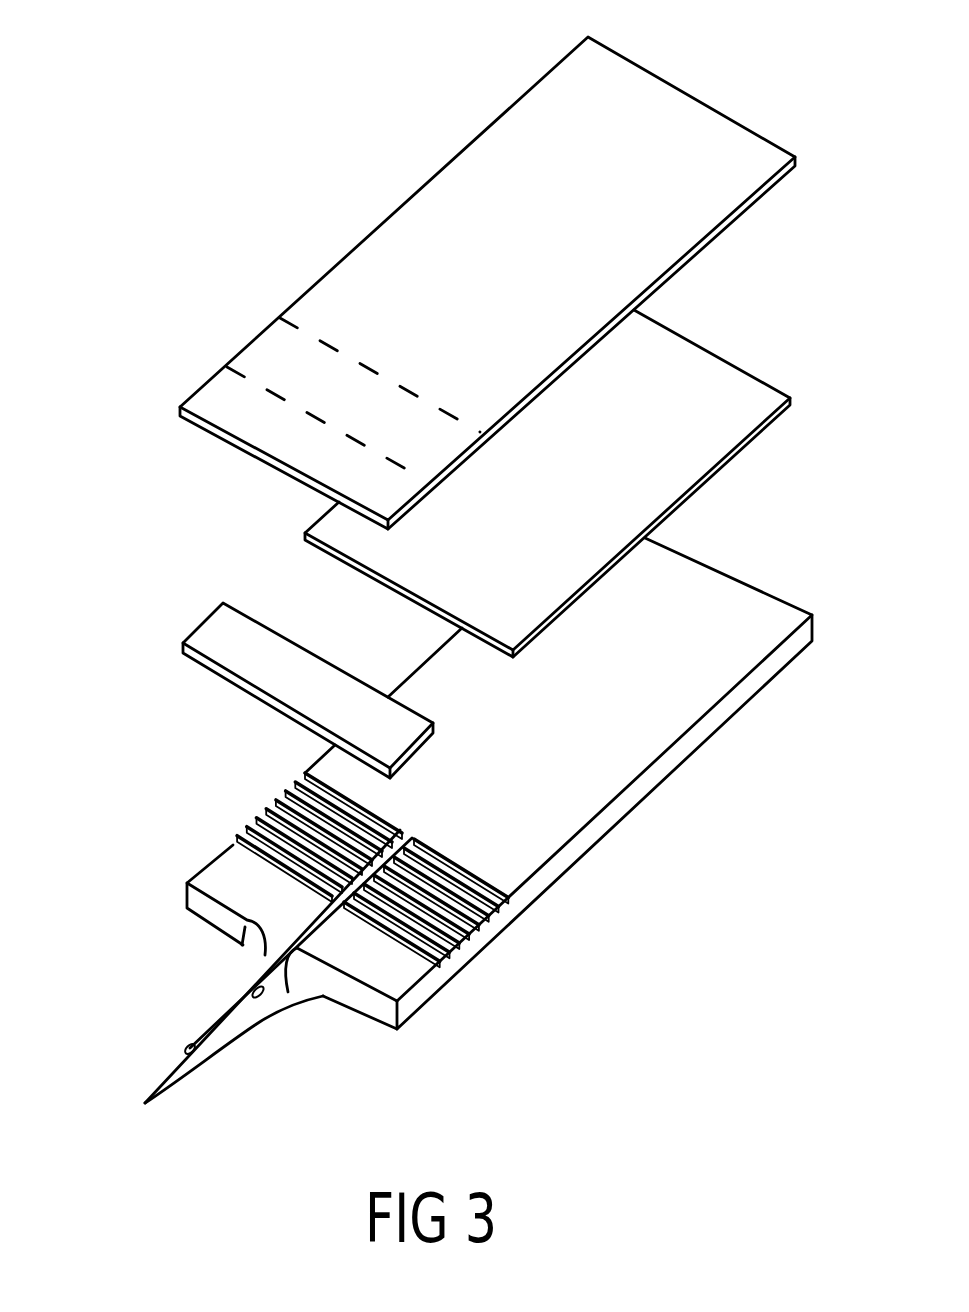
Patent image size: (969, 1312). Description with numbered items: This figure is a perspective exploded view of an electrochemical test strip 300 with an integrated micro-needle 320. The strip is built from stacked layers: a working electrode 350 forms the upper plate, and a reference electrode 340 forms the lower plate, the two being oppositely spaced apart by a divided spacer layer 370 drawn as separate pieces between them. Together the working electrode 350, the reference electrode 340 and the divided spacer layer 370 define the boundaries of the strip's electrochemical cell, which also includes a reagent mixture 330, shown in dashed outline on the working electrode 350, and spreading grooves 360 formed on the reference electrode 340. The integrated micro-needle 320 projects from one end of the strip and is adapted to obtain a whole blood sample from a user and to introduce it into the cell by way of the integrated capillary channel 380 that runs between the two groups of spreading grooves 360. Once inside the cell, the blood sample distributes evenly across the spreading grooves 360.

The electrochemical test strip 300 is at (756, 86).
The integrated micro-needle 320 is at (197, 1060).
The reagent mixture 330 is at (325, 372).
The reference electrode 340 is at (675, 757).
The working electrode 350 is at (688, 213).
The spreading grooves 360 is at (473, 937).
The divided spacer layer 370 is at (732, 463).
The integrated capillary channel 380 is at (262, 1002).